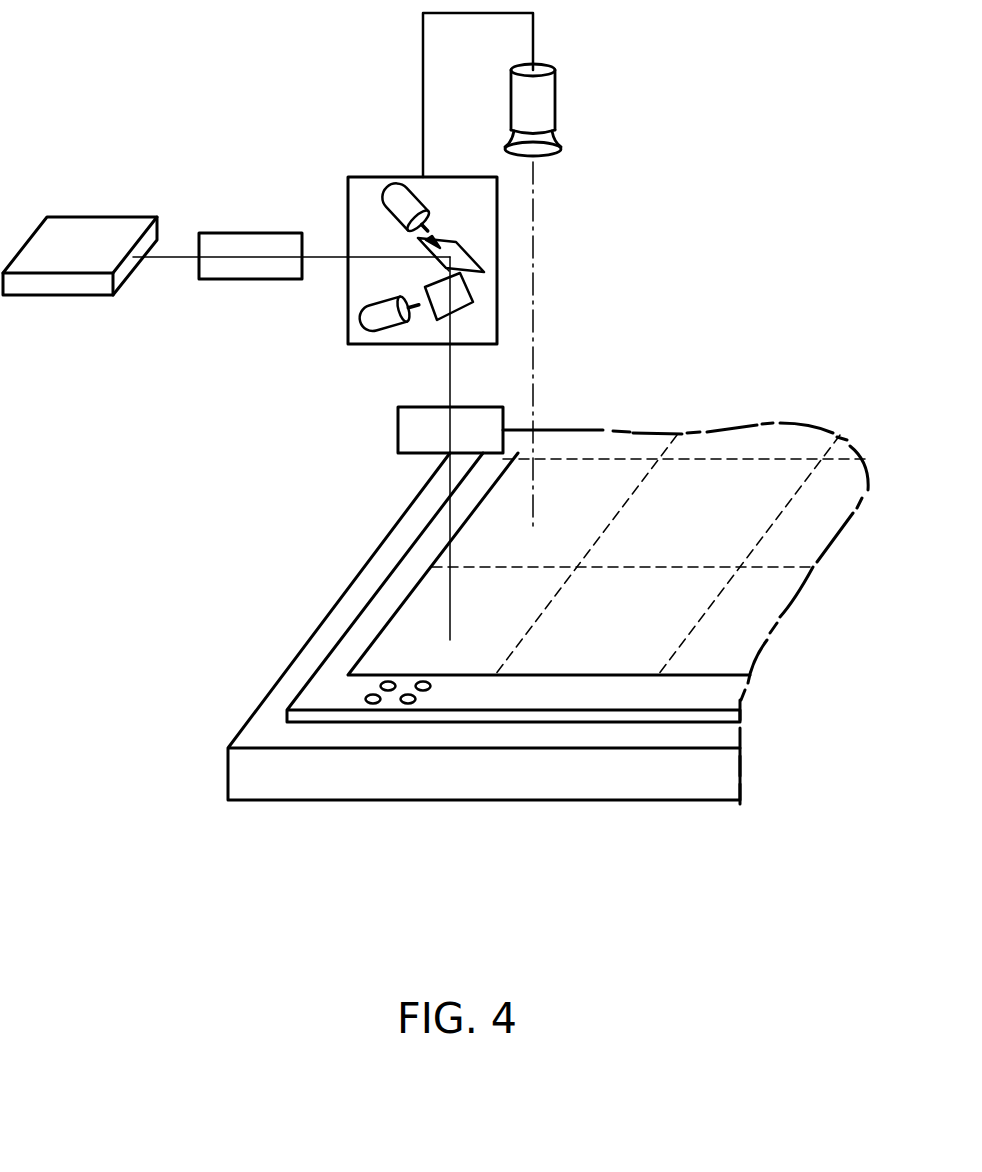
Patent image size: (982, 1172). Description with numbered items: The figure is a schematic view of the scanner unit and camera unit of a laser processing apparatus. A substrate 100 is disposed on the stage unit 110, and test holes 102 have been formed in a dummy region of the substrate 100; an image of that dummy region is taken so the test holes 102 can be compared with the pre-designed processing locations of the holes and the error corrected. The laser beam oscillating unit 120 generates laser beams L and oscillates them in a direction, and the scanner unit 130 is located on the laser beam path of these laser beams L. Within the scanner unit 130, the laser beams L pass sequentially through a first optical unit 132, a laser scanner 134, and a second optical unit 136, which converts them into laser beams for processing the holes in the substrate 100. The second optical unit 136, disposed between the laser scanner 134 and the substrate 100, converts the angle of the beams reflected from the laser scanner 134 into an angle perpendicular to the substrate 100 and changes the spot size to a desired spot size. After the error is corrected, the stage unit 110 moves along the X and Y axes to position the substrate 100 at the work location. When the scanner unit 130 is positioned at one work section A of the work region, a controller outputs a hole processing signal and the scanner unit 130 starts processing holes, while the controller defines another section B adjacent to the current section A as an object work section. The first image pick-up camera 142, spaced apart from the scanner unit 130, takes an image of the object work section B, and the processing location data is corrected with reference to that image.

The substrate 100 is at (647, 713).
The test holes 102 is at (423, 687).
The stage unit 110 is at (553, 772).
The laser beam oscillating unit 120 is at (88, 283).
The scanner unit 130 is at (285, 452).
The first optical unit 132 is at (248, 277).
The laser scanner 134 is at (347, 323).
The second optical unit 136 is at (398, 417).
The first image pick-up camera 142 is at (549, 103).
The laser beams L is at (178, 255).
The work section A is at (463, 449).
The object work section B is at (546, 351).